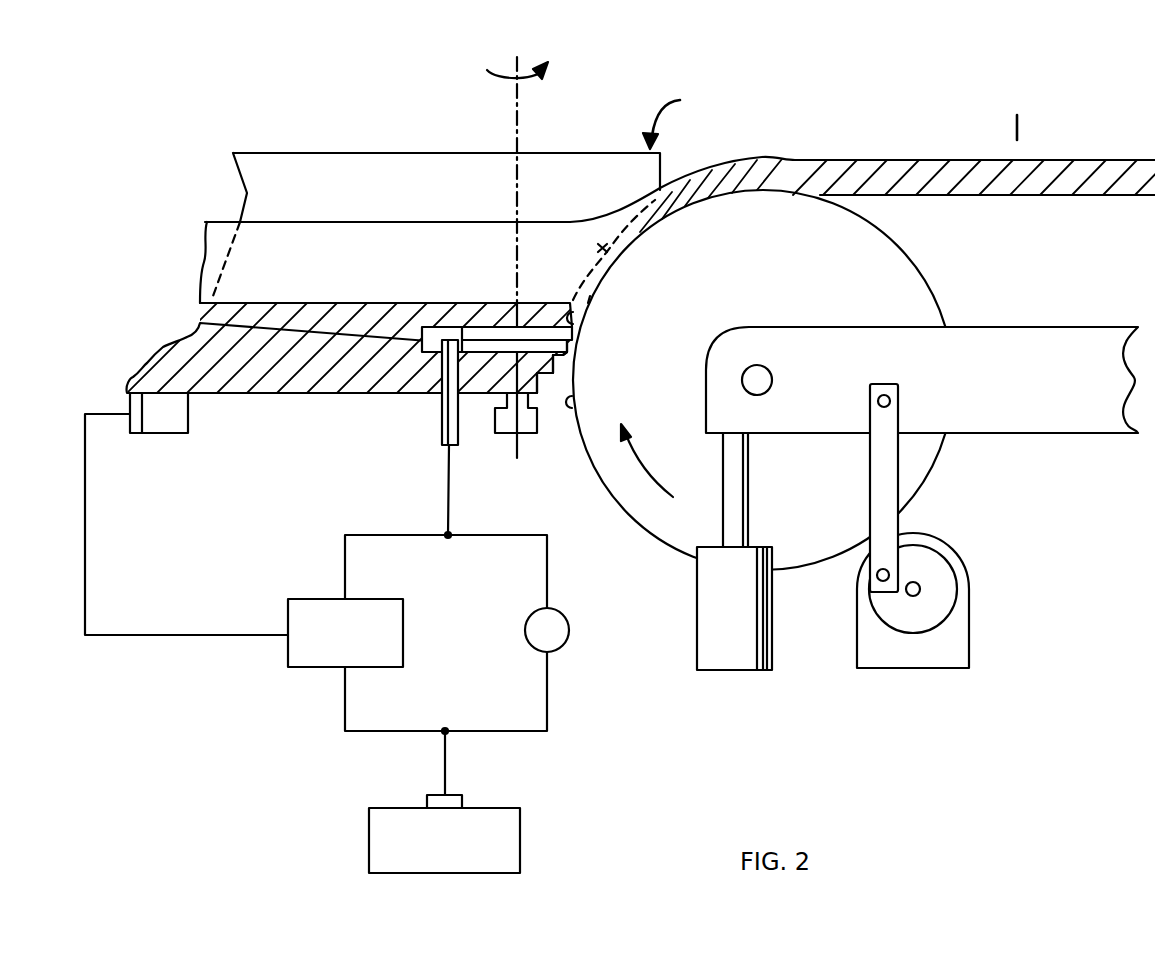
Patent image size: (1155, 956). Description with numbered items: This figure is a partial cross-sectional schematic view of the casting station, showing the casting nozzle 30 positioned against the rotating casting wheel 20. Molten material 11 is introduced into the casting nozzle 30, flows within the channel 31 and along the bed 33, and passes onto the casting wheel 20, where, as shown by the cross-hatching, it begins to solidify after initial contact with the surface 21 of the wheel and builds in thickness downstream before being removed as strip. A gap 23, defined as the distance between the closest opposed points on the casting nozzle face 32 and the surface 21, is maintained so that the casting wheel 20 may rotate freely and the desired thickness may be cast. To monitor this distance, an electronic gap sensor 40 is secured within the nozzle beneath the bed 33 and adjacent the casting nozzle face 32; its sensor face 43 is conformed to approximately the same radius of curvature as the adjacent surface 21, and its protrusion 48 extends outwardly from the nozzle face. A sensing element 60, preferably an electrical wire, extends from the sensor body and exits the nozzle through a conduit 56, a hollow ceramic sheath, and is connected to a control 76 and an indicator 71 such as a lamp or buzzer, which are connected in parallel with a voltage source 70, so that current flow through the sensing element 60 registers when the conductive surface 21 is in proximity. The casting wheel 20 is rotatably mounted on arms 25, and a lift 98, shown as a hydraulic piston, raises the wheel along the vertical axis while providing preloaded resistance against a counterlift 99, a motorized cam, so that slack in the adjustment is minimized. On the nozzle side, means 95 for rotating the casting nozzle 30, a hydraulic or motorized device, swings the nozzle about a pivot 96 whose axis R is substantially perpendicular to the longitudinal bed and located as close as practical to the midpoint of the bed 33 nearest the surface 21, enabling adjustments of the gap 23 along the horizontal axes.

The molten material 11 is at (227, 222).
The casting wheel 20 is at (834, 289).
The surface 21 is at (571, 406).
The gap 23 is at (592, 300).
The arms 25 is at (1024, 396).
The casting nozzle 30 is at (678, 119).
The channel 31 is at (352, 165).
The casting nozzle face 32 is at (600, 248).
The bed 33 is at (440, 300).
The gap sensor 40 is at (568, 360).
The sensor face 43 is at (567, 345).
The protrusion 48 is at (573, 320).
The conduit 56 is at (441, 405).
The sensing element 60 is at (446, 470).
The voltage source 70 is at (510, 835).
The indicator 71 is at (569, 630).
The control 76 is at (364, 644).
The means for rotating casting nozzle 95 is at (153, 422).
The pivot 96 is at (537, 427).
The lift 98 is at (737, 611).
The counterlift 99 is at (973, 588).